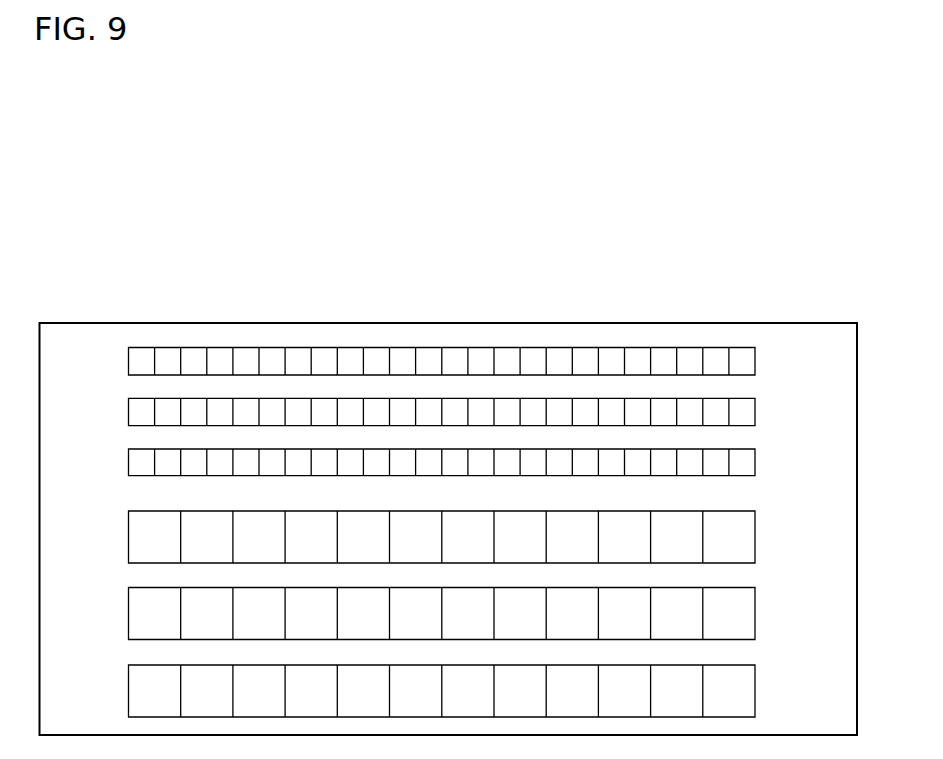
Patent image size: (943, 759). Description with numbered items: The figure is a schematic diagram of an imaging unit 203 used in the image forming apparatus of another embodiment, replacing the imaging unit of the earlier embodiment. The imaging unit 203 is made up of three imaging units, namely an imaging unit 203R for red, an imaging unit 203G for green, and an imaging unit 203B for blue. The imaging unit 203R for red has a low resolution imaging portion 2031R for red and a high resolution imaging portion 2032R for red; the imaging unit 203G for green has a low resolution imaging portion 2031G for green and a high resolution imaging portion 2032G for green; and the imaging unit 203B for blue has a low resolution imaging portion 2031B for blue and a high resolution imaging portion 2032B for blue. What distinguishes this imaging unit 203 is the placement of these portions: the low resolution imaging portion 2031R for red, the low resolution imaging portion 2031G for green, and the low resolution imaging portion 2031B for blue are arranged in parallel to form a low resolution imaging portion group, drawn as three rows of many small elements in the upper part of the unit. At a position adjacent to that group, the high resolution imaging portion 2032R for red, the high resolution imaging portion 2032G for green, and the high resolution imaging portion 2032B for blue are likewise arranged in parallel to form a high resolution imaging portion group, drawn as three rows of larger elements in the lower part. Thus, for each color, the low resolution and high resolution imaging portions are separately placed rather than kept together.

The imaging unit 203 is at (694, 312).
The imaging unit for red 203R is at (486, 447).
The imaging unit for green 203G is at (486, 516).
The imaging unit for blue 203B is at (485, 583).
The low resolution imaging portion for red 2031R is at (755, 350).
The low resolution imaging portion for green 2031G is at (756, 411).
The low resolution imaging portion for blue 2031B is at (756, 471).
The high resolution imaging portion for red 2032R is at (756, 536).
The high resolution imaging portion for green 2032G is at (756, 614).
The high resolution imaging portion for blue 2032B is at (756, 691).